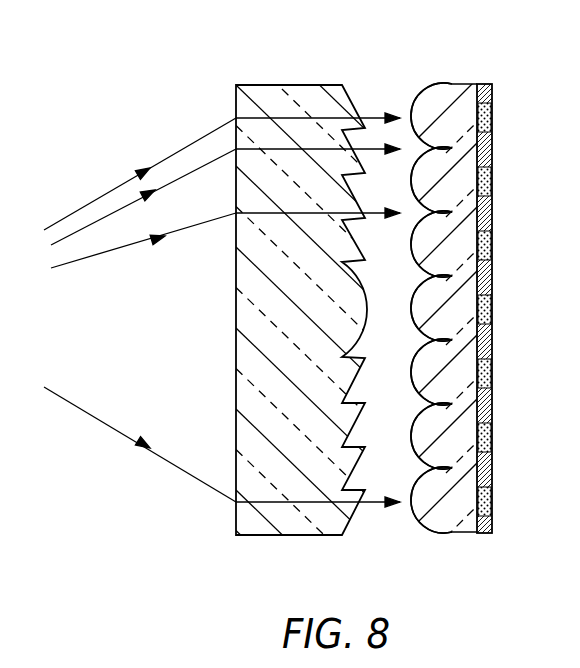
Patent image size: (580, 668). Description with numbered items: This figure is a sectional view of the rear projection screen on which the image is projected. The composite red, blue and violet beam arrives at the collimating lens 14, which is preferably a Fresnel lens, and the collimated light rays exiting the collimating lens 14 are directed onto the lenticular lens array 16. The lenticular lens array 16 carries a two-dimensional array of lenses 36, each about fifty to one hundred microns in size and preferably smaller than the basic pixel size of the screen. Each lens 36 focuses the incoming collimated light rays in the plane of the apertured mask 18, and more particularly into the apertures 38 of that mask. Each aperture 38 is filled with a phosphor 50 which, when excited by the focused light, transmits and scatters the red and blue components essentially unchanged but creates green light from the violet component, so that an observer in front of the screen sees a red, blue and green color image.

The collimating lens 14 is at (276, 88).
The lenticular lens array 16 is at (458, 84).
The apertured mask 18 is at (482, 84).
The lens 36 is at (428, 120).
The aperture 38 is at (493, 112).
The phosphor 50 is at (477, 167).